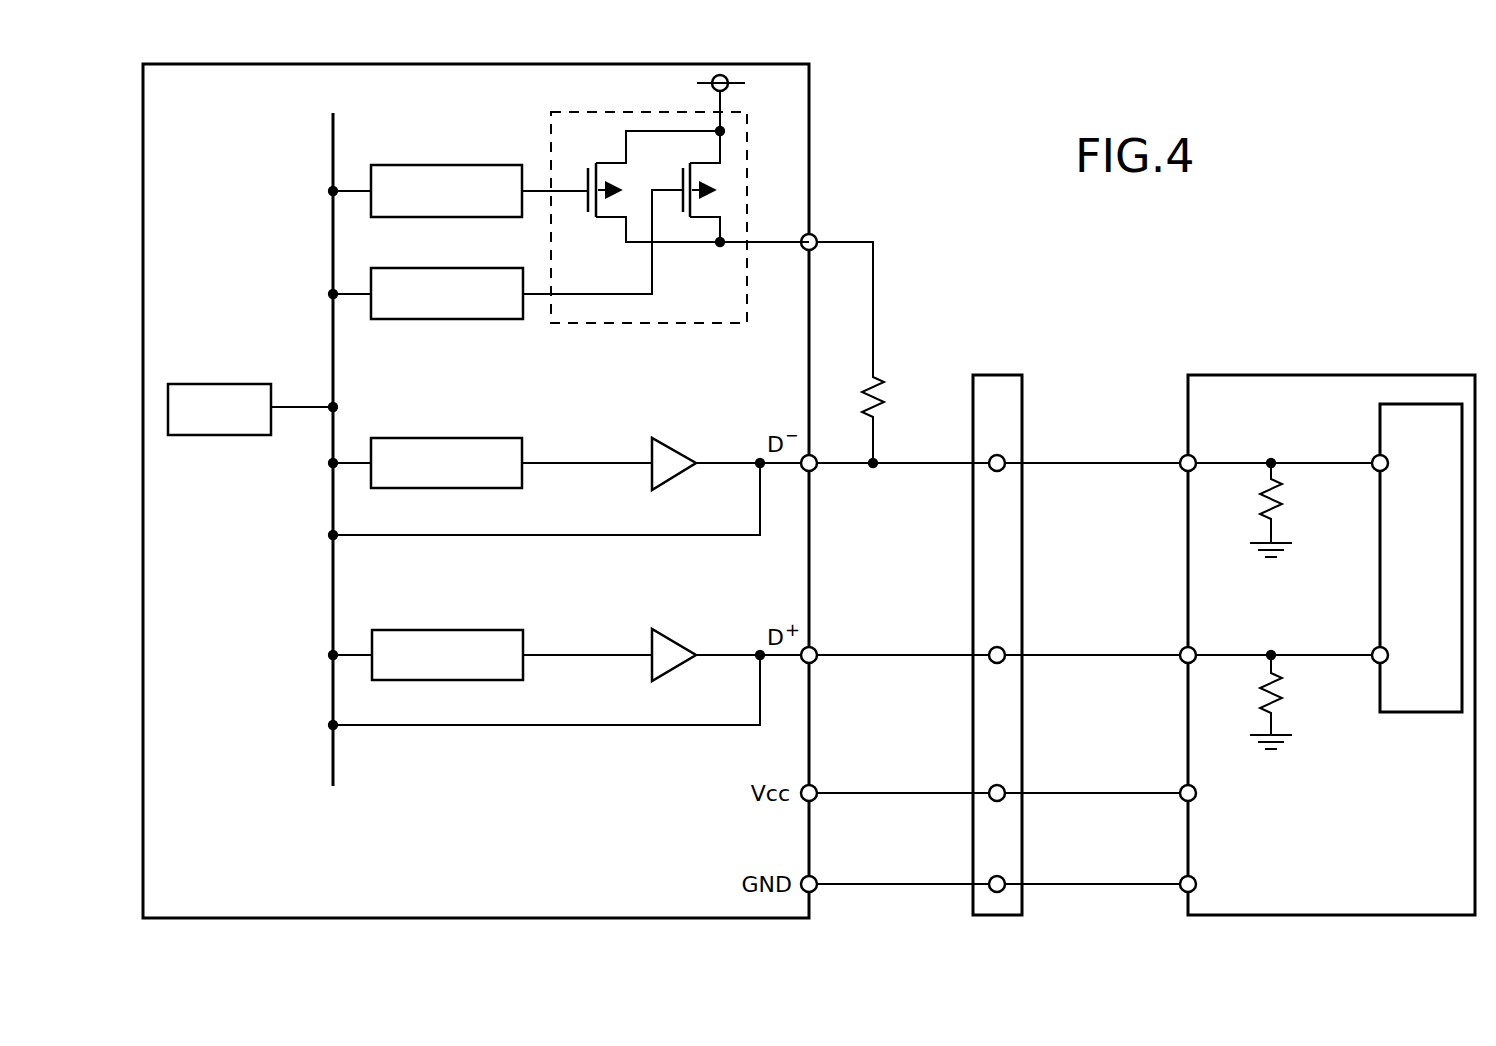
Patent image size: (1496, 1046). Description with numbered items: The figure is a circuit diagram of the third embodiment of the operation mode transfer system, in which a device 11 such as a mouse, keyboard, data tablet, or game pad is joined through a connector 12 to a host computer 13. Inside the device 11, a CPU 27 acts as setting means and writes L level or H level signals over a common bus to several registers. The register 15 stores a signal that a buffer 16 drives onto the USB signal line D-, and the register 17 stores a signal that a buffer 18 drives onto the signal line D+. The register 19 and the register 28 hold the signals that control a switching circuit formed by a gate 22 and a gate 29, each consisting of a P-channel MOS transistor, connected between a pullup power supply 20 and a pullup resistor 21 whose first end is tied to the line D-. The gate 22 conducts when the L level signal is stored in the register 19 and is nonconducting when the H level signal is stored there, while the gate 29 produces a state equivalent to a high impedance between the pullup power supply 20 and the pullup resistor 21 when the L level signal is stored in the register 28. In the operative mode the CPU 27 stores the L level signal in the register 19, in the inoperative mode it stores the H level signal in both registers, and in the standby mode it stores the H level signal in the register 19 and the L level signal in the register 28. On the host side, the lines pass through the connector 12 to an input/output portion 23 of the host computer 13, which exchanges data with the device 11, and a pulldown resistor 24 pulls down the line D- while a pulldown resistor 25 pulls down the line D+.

The device 11 is at (811, 112).
The connector 12 is at (1000, 375).
The host computer 13 is at (1327, 612).
The register 15 is at (419, 438).
The buffer 16 is at (672, 446).
The register 17 is at (446, 630).
The buffer 18 is at (672, 638).
The register 19 is at (441, 165).
The pullup power supply 20 is at (735, 89).
The pullup resistor 21 is at (889, 387).
The gate 22 is at (680, 217).
The input/output portion 23 is at (1420, 712).
The pulldown resistor 24 is at (1292, 515).
The pulldown resistor 25 is at (1292, 709).
The CPU 27 is at (230, 384).
The register 28 is at (484, 321).
The gate 29 is at (675, 181).